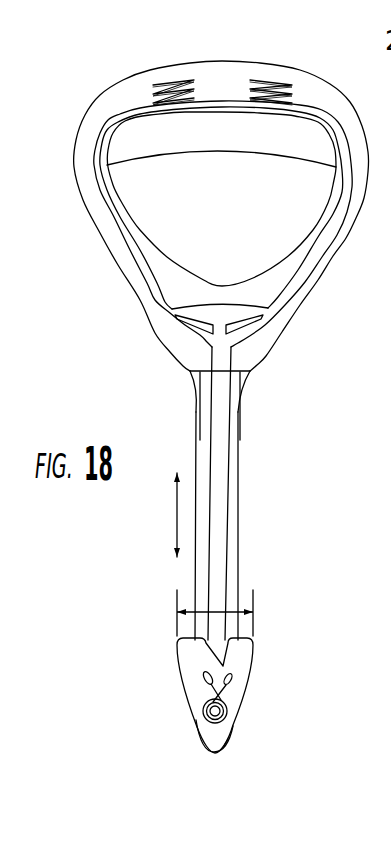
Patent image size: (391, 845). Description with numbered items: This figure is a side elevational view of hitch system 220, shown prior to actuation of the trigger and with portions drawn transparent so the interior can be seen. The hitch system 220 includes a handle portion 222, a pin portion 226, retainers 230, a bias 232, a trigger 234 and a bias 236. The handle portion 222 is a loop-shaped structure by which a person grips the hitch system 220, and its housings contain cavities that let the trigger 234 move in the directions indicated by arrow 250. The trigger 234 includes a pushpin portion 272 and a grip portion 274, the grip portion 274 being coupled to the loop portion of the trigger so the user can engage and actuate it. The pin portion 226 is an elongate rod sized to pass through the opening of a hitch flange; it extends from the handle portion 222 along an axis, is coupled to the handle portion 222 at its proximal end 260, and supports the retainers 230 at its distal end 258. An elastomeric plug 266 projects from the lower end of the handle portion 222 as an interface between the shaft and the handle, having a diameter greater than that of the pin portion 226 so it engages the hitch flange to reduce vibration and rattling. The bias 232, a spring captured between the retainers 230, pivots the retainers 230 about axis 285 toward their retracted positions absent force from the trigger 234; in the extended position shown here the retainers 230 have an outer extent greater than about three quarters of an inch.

The hitch system 220 is at (60, 98).
The handle portion 222 is at (337, 247).
The pin portion 226 is at (238, 473).
The retainers 230 is at (175, 648).
The bias 232 is at (205, 680).
The trigger 234 is at (283, 305).
The bias 236 is at (175, 78).
The arrow 250 is at (176, 514).
The distal end 258 is at (225, 768).
The proximal end 260 is at (176, 385).
The elastomeric plug 266 is at (247, 388).
The pushpin portion 272 is at (225, 537).
The grip portion 274 is at (157, 135).
The axis 285 is at (226, 711).